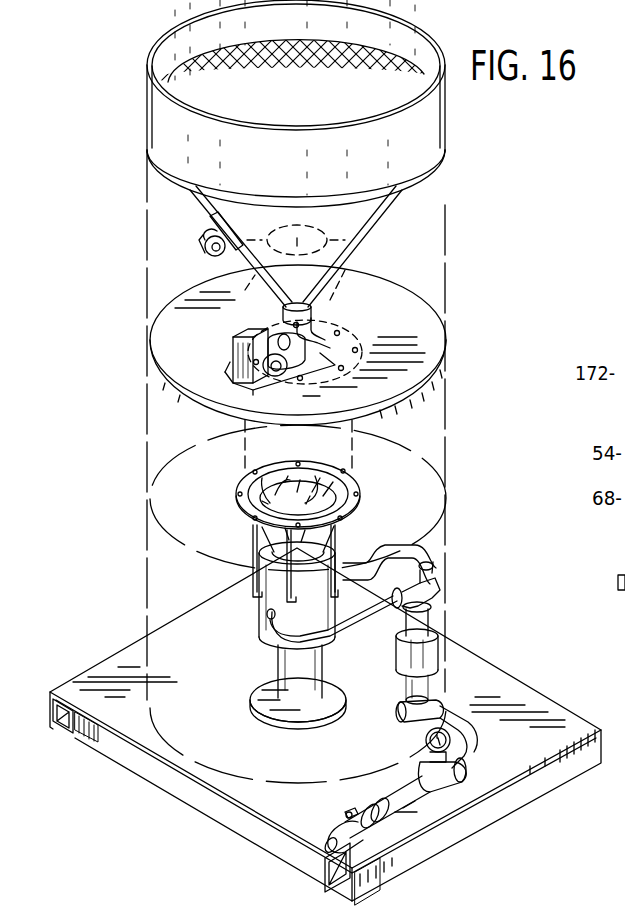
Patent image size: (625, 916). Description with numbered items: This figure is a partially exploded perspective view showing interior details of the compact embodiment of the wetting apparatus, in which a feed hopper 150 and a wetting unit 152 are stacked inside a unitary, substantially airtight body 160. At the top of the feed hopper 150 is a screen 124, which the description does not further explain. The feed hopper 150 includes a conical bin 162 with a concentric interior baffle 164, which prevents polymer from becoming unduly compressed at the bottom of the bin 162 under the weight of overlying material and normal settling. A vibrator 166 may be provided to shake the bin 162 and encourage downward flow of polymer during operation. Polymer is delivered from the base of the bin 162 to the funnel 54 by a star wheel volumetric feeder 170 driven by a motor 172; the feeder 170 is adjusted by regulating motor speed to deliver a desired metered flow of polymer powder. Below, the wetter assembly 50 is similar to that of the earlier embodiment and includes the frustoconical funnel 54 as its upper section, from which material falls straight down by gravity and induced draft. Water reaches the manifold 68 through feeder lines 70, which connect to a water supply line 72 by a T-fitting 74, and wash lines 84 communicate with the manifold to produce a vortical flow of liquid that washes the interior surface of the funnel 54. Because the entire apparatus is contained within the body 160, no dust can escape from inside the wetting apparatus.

The wetter assembly 50 is at (255, 635).
The funnel 54 is at (340, 492).
The manifold 68 is at (258, 607).
The feeder lines 70 is at (432, 543).
The water supply line 72 is at (400, 728).
The T-fitting 74 is at (432, 590).
The wash lines 84 is at (252, 545).
The screen 124 is at (333, 48).
The feed hopper 150 is at (138, 143).
The wetting unit 152 is at (135, 550).
The body 160 is at (148, 430).
The conical bin 162 is at (350, 232).
The interior baffle 164 is at (292, 222).
The vibrator 166 is at (200, 244).
The star wheel volumetric feeder 170 is at (325, 334).
The motor 172 is at (235, 352).